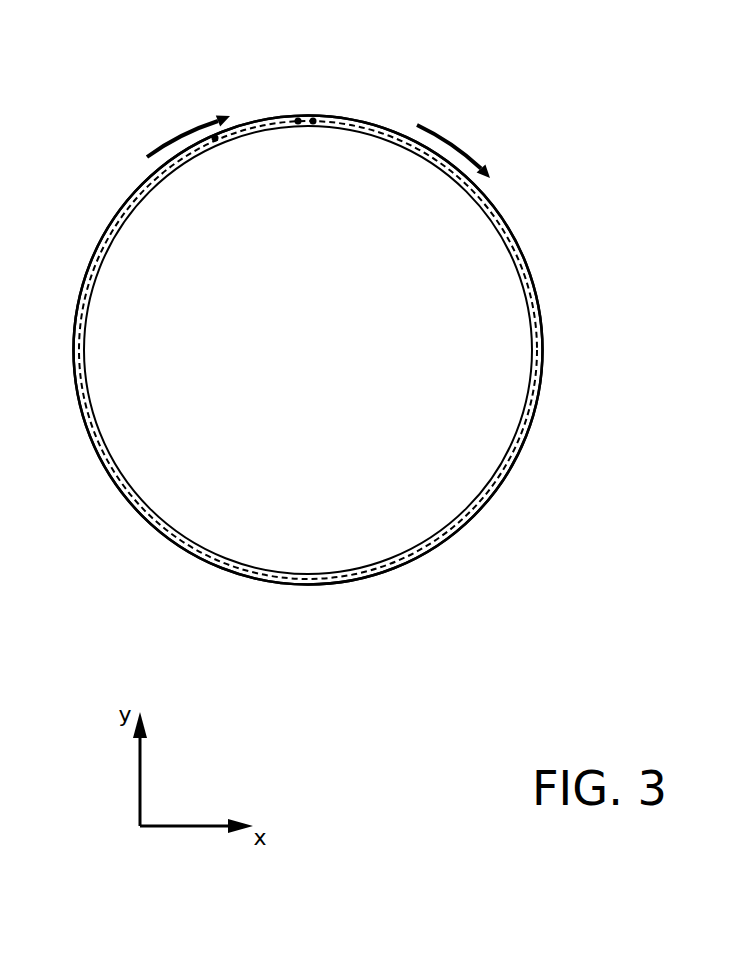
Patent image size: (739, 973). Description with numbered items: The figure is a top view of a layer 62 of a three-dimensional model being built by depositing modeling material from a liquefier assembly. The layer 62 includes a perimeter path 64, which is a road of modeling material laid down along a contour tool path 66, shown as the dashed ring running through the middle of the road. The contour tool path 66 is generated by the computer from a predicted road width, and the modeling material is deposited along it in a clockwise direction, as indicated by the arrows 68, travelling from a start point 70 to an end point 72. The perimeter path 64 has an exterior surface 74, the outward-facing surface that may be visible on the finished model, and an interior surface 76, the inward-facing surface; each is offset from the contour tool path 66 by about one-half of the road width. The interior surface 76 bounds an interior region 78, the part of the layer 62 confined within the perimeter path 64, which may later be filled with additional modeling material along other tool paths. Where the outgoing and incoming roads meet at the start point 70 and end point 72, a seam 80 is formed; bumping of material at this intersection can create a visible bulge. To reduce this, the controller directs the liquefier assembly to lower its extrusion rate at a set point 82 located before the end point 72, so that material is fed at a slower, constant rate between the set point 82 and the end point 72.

The layer 62 is at (75, 109).
The perimeter path 64 is at (562, 349).
The contour tool path 66 is at (522, 445).
The arrows 68 is at (177, 133).
The start point 70 is at (316, 116).
The end point 72 is at (298, 116).
The exterior surface 74 is at (478, 510).
The interior surface 76 is at (472, 503).
The interior region 78 is at (256, 362).
The seam 80 is at (308, 100).
The set point 82 is at (215, 141).